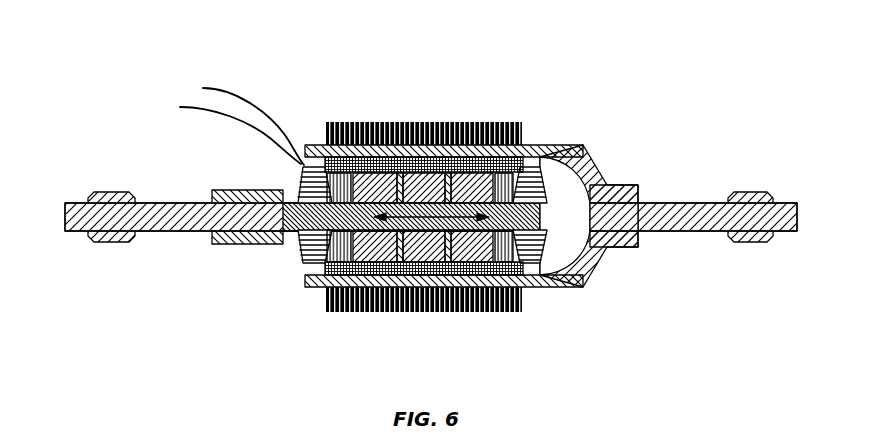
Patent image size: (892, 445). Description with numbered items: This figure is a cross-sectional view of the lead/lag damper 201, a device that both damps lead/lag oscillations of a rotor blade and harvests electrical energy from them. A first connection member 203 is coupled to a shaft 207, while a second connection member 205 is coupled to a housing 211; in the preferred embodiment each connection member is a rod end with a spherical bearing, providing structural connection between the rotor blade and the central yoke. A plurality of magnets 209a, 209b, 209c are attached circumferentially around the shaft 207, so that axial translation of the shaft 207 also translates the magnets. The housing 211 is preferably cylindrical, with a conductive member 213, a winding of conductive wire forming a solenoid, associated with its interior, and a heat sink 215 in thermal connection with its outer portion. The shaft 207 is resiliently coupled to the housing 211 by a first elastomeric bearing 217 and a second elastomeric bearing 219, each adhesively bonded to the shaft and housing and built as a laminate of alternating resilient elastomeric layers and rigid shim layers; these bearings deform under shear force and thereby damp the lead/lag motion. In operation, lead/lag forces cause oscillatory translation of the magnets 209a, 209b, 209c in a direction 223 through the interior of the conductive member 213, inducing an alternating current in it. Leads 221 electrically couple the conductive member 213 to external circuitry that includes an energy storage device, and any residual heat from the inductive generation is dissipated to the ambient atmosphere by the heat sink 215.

The lead/lag damper 201 is at (148, 135).
The first connection member 203 is at (115, 243).
The second connection member 205 is at (743, 243).
The shaft 207 is at (548, 200).
The magnet 209a is at (350, 176).
The magnet 209b is at (408, 176).
The magnet 209c is at (473, 176).
The housing 211 is at (570, 288).
The conductive member 213 is at (514, 152).
The heat sink 215 is at (450, 312).
The first elastomeric bearing 217 is at (300, 252).
The second elastomeric bearing 219 is at (543, 185).
The leads 221 is at (203, 88).
The direction 223 is at (410, 264).